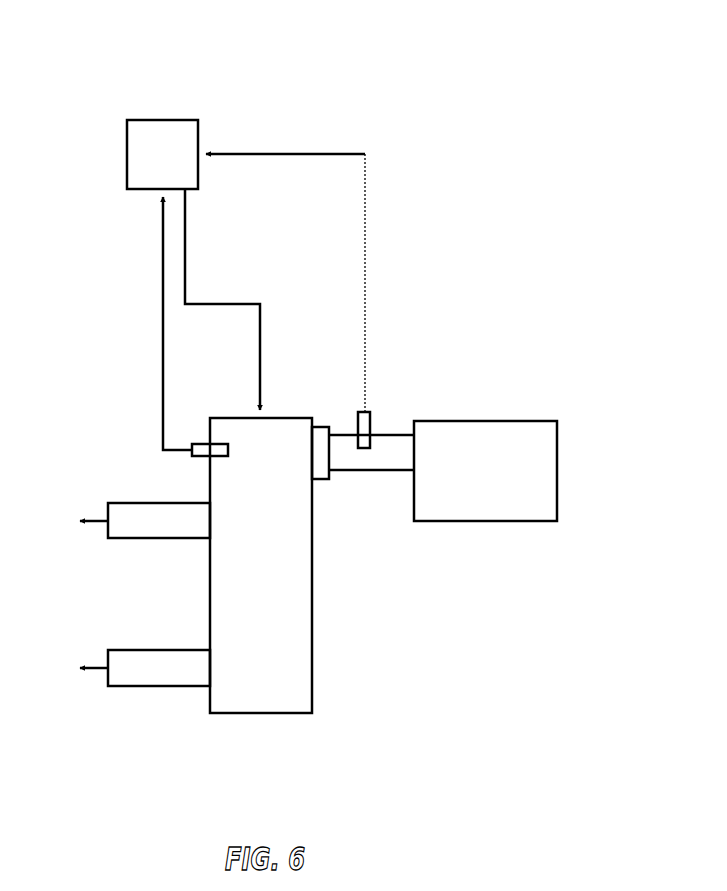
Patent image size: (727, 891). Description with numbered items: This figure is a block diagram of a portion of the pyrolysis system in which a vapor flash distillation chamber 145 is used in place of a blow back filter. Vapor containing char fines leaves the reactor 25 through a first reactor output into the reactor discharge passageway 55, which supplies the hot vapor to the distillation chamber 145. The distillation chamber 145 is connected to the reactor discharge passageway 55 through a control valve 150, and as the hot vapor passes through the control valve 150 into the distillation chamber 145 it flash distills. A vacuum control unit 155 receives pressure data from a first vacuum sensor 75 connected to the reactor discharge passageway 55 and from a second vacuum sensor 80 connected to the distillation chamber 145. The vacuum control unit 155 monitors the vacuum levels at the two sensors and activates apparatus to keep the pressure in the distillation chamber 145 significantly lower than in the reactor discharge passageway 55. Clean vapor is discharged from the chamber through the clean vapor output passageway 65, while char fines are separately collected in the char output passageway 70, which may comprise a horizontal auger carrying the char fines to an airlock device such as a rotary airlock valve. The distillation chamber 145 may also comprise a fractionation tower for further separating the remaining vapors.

The reactor 25 is at (517, 419).
The reactor discharge passageway 55 is at (342, 473).
The clean vapor output passageway 65 is at (155, 540).
The char output passageway 70 is at (175, 687).
The first vacuum sensor 75 is at (372, 425).
The second vacuum sensor 80 is at (197, 457).
The vapor flash distillation chamber 145 is at (313, 577).
The control valve 150 is at (323, 424).
The vacuum control unit 155 is at (163, 119).